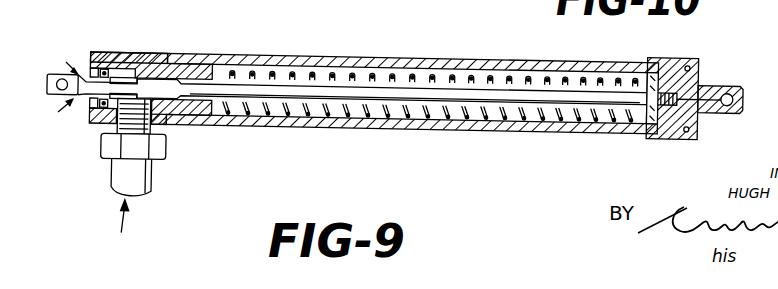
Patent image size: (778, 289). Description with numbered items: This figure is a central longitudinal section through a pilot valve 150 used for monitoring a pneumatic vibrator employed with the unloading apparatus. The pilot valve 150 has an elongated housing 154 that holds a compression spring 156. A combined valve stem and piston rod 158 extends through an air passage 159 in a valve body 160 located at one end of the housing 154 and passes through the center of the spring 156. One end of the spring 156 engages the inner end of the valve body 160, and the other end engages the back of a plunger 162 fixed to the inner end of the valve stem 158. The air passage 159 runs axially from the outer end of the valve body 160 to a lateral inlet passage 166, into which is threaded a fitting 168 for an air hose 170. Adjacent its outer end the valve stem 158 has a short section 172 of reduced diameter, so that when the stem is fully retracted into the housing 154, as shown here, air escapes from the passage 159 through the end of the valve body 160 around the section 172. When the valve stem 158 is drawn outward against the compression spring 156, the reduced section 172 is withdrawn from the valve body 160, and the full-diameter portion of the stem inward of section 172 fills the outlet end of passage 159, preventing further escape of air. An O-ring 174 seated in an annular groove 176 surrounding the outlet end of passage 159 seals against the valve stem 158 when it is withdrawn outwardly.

The pilot valve 150 is at (378, 56).
The elongated housing 154 is at (529, 125).
The compression spring 156 is at (583, 118).
The combined valve stem and piston rod 158 is at (49, 76).
The air passage 159 is at (128, 77).
The valve body 160 is at (163, 53).
The plunger 162 is at (695, 64).
The lateral inlet passage 166 is at (152, 125).
The fitting 168 is at (146, 152).
The air hose 170 is at (118, 178).
The reduced-diameter section 172 is at (84, 73).
The O-ring 174 is at (104, 68).
The annular groove 176 is at (96, 104).